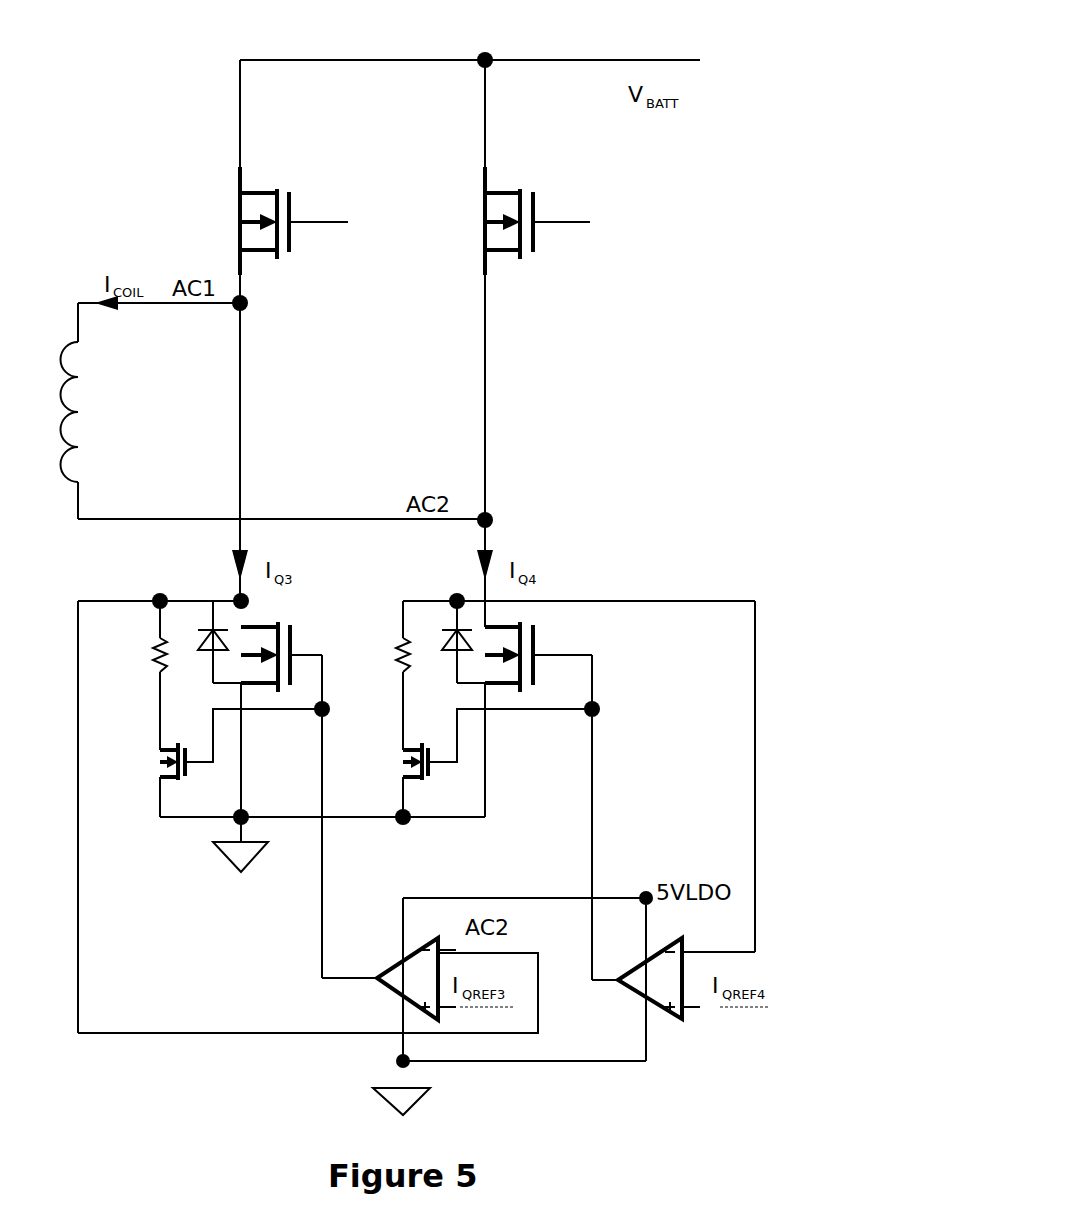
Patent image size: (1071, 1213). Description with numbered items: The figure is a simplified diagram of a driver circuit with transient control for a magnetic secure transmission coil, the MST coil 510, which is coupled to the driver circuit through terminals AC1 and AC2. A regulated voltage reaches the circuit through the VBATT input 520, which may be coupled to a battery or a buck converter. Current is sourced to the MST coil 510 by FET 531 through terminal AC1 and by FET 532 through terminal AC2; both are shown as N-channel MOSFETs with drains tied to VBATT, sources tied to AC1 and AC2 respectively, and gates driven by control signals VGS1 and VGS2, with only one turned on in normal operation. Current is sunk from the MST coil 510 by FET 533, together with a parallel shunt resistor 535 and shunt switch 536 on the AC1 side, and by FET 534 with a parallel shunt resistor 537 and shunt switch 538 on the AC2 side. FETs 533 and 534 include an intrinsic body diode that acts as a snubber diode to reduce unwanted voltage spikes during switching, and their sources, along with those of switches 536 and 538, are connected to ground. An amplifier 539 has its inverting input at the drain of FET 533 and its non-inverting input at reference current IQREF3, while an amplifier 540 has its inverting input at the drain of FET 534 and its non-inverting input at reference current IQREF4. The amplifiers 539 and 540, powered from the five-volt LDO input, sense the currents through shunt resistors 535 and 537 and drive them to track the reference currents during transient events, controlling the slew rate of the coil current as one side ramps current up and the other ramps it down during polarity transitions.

The MST coil 510 is at (105, 333).
The VBATT input 520 is at (705, 62).
The FET 531 is at (298, 198).
The FET 532 is at (540, 198).
The FET 533 is at (278, 612).
The FET 534 is at (540, 622).
The shunt resistor 535 is at (142, 680).
The shunt switch 536 is at (150, 790).
The shunt resistor 537 is at (403, 638).
The shunt switch 538 is at (400, 750).
The amplifier 539 is at (385, 998).
The amplifier 540 is at (670, 1022).